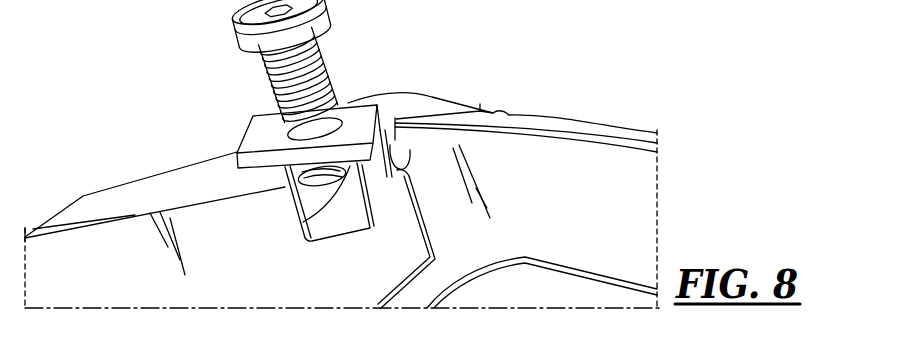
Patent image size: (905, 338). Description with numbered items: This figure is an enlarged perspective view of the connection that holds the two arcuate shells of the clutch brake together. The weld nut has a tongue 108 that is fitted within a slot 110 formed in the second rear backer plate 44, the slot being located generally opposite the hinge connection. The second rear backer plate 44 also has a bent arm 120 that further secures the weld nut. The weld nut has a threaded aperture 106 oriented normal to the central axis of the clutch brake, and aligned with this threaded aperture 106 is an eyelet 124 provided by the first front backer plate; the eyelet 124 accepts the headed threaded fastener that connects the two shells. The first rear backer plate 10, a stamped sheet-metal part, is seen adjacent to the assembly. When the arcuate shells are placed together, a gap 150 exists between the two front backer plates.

The first rear backer plate 10 is at (600, 137).
The second rear backer plate 44 is at (35, 230).
The threaded aperture 106 is at (313, 205).
The tongue 108 is at (333, 228).
The slot 110 is at (357, 206).
The bent arm 120 is at (385, 124).
The eyelet 124 is at (336, 135).
The gap 150 is at (426, 235).